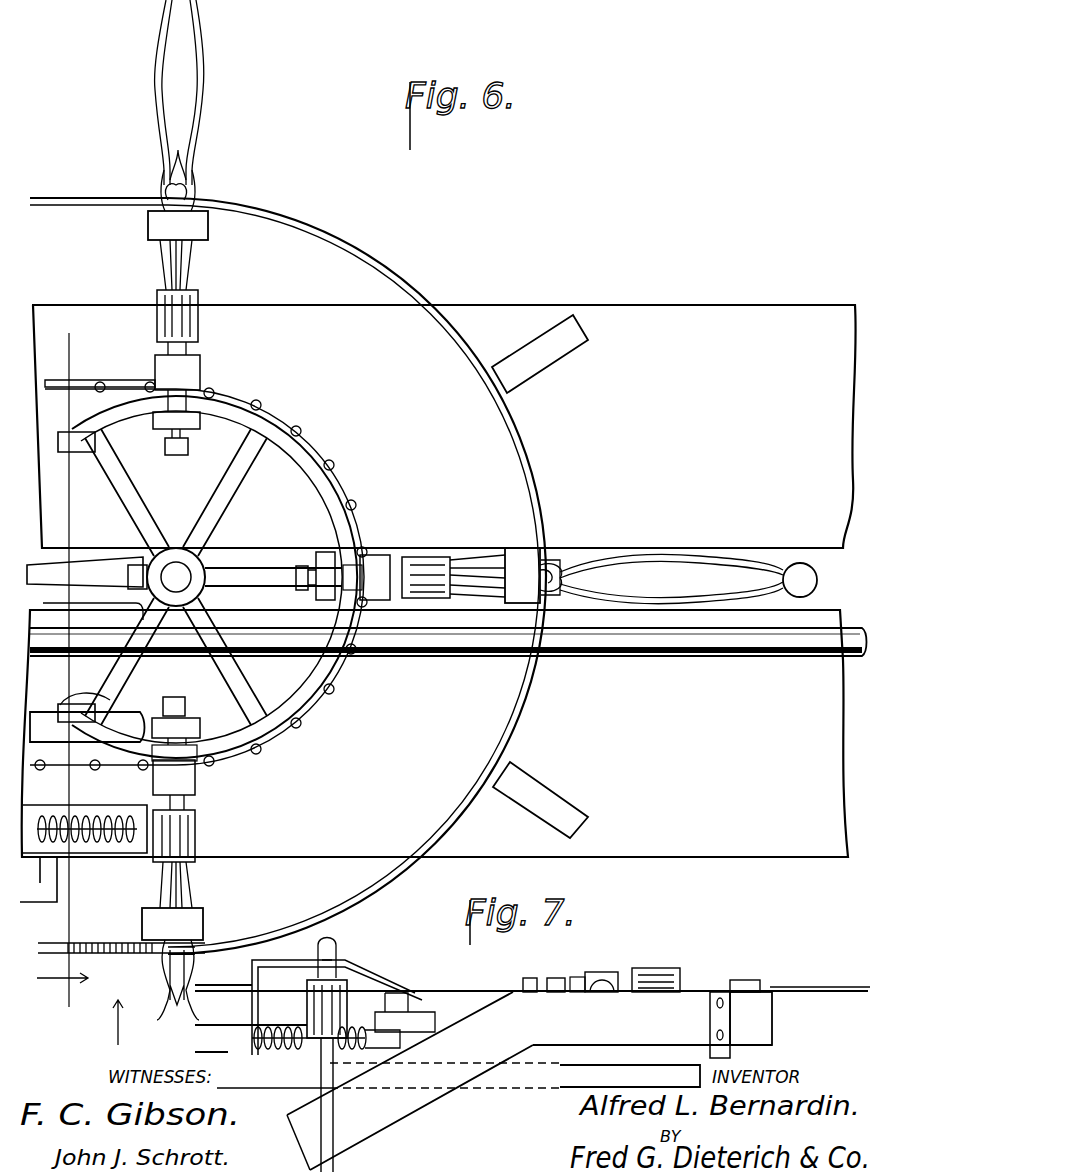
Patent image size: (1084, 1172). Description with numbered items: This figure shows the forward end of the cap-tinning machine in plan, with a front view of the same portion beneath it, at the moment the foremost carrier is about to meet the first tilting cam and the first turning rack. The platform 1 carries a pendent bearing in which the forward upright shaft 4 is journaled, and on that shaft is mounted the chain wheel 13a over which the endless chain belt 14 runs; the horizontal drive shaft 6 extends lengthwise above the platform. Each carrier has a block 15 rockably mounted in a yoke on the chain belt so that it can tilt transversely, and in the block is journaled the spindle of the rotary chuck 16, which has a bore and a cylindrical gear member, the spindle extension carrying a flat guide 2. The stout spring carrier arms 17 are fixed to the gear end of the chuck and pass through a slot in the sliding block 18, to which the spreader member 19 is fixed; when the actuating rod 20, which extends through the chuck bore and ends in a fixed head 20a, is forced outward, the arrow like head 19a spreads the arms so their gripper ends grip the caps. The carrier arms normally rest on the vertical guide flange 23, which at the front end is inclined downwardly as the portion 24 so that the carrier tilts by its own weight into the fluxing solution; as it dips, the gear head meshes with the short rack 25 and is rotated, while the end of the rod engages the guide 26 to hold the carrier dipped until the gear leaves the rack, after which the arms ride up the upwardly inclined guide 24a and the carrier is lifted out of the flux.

In FIG. 6, the platform 1 is at (688, 470).
In FIG. 7, the platform 1 is at (540, 1095).
In FIG. 6, the collar 2 is at (243, 575).
In FIG. 7, the collar 2 is at (552, 975).
In FIG. 6, the upright shaft 4 is at (176, 560).
In FIG. 7, the upright shaft 4 is at (395, 1000).
In FIG. 6, the drive shaft 6 is at (622, 660).
In FIG. 6, the chain wheel 13a is at (305, 462).
In FIG. 6, the chain belt 14 is at (118, 385).
In FIG. 7, the chain belt 14 is at (437, 1025).
In FIG. 6, the block 15 is at (190, 782).
In FIG. 7, the block 15 is at (596, 975).
In FIG. 6, the rotary carrier head or chuck 16 is at (208, 440).
In FIG. 7, the rotary carrier head or chuck 16 is at (585, 966).
In FIG. 6, the carrier arms 17 is at (200, 68).
In FIG. 7, the carrier arms 17 is at (826, 990).
In FIG. 6, the block 18 is at (193, 229).
In FIG. 7, the block 18 is at (742, 980).
In FIG. 6, the spreader member 19 is at (178, 960).
In FIG. 6, the arrow like head 19a is at (618, 582).
In FIG. 6, the actuating rod 20 is at (180, 268).
In FIG. 6, the fixed head 20a is at (178, 456).
In FIG. 7, the fixed head 20a is at (525, 978).
In FIG. 6, the vertical guide flange 23 is at (325, 237).
In FIG. 7, the vertical guide flange 23 is at (760, 1027).
In FIG. 6, the inclined portion 24 is at (90, 933).
In FIG. 7, the inclined portion 24 is at (365, 1125).
In FIG. 6, the upwardly inclined guide 24a is at (28, 892).
In FIG. 6, the short rack 25 is at (88, 818).
In FIG. 7, the short rack 25 is at (285, 1050).
In FIG. 6, the guide 26 is at (123, 720).
In FIG. 7, the guide 26 is at (375, 972).